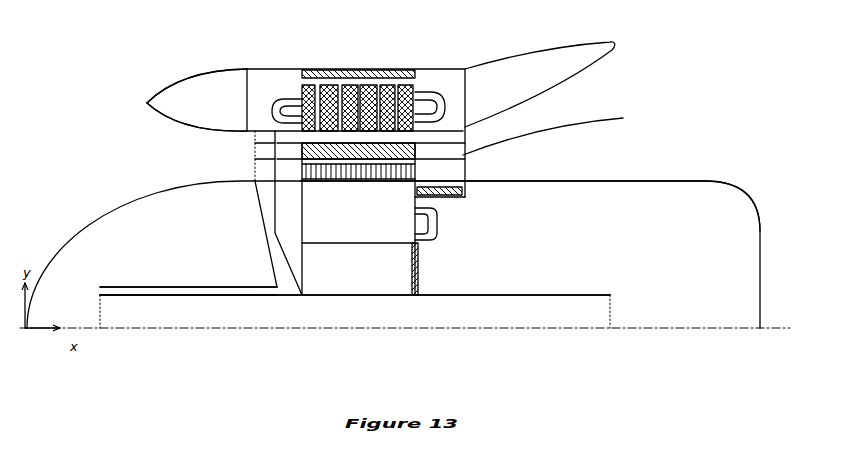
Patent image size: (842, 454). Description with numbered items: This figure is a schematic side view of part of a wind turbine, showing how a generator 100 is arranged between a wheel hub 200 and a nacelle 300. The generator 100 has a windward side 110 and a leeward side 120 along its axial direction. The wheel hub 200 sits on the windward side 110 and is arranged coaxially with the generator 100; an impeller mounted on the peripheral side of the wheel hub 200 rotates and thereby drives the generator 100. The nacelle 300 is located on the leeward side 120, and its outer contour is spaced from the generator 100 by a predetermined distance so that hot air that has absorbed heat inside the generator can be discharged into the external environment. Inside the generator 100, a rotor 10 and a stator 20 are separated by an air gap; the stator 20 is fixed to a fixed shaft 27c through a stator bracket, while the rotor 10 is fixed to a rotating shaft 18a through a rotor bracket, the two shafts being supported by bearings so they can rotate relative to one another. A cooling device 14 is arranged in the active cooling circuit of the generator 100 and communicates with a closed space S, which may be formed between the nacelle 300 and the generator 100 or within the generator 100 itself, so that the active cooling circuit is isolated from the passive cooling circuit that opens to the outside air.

The generator 100 is at (377, 162).
The rotor 10 is at (433, 66).
The windward side 110 is at (148, 140).
The leeward side 120 is at (614, 89).
The stator 20 is at (297, 102).
The cooling device 14 is at (439, 228).
The wheel hub 200 is at (78, 228).
The nacelle 300 is at (648, 176).
The closed space S is at (710, 208).
The rotating shaft 18a is at (203, 286).
The fixed shaft 27c is at (178, 297).